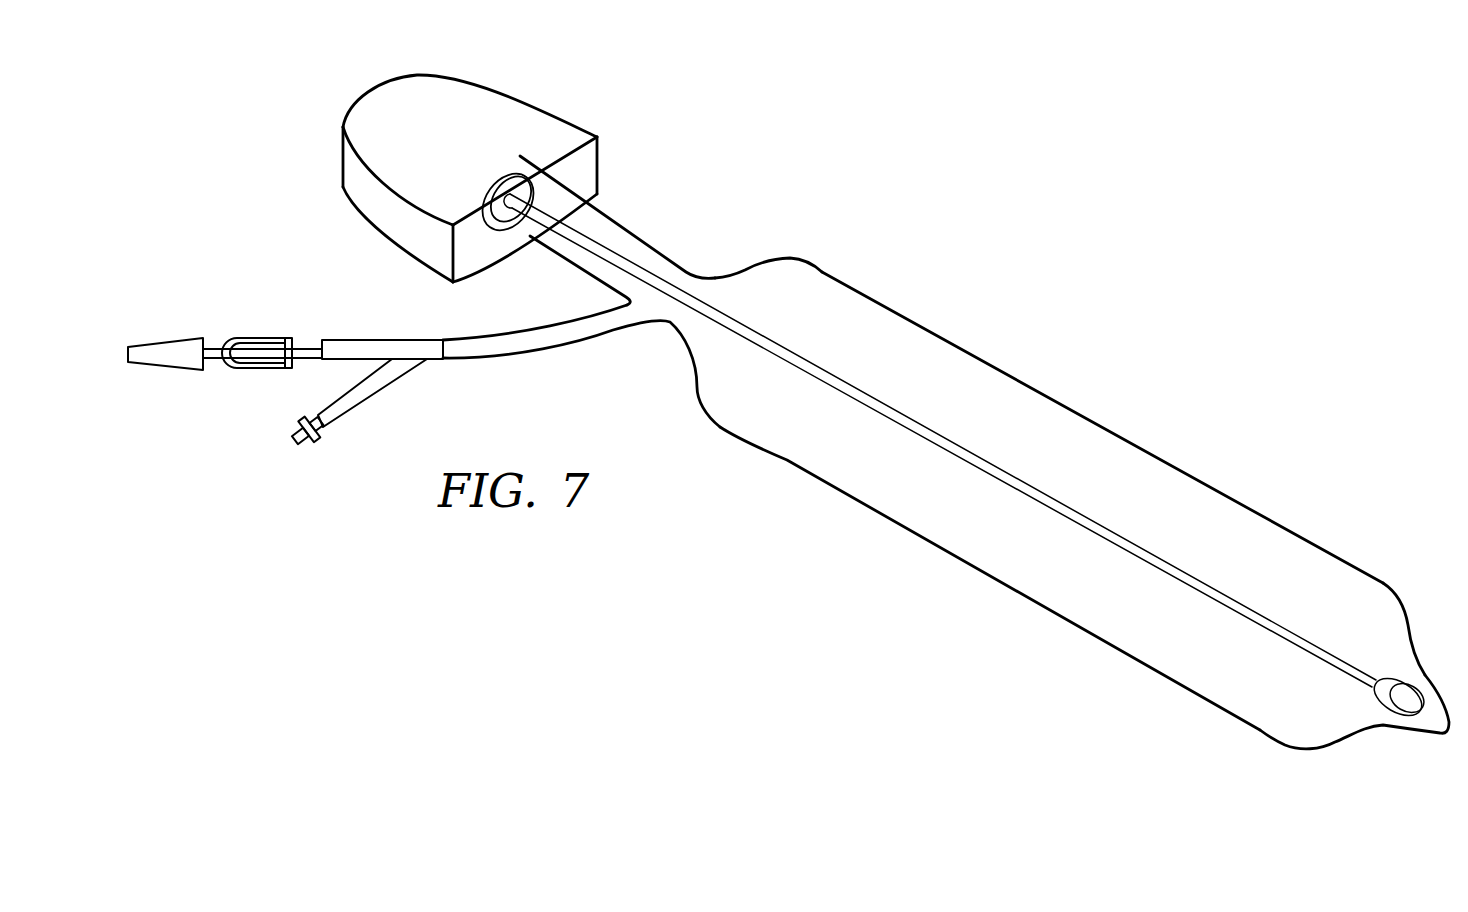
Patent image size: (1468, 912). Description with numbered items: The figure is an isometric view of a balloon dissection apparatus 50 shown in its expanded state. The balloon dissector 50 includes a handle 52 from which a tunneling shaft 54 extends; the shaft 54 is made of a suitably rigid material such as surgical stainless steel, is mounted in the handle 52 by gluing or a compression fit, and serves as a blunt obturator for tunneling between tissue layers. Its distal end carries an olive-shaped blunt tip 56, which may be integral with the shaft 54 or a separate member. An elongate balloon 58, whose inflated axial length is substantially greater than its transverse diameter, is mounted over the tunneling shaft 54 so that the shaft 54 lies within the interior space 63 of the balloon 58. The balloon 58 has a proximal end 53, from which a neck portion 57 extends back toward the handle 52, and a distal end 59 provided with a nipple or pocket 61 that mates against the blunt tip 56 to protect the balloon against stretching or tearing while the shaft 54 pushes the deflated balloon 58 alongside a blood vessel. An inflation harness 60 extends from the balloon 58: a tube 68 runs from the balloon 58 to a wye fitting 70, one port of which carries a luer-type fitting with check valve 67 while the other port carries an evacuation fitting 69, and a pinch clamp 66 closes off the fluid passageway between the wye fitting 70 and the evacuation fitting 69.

The balloon dissection apparatus 50 is at (953, 495).
The handle 52 is at (500, 108).
The proximal end 53 is at (790, 258).
The tunneling shaft 54 is at (963, 447).
The blunt tip 56 is at (1392, 686).
The neck portion 57 is at (643, 235).
The elongate balloon 58 is at (1082, 418).
The distal end 59 is at (1410, 622).
The inflation harness 60 is at (377, 369).
The nipple or pocket 61 is at (1442, 733).
The interior space 63 is at (1160, 642).
The pinch clamp 66 is at (243, 368).
The luer-type fitting with check valve 67 is at (318, 440).
The tube 68 is at (477, 360).
The evacuation fitting 69 is at (170, 340).
The wye fitting 70 is at (376, 340).